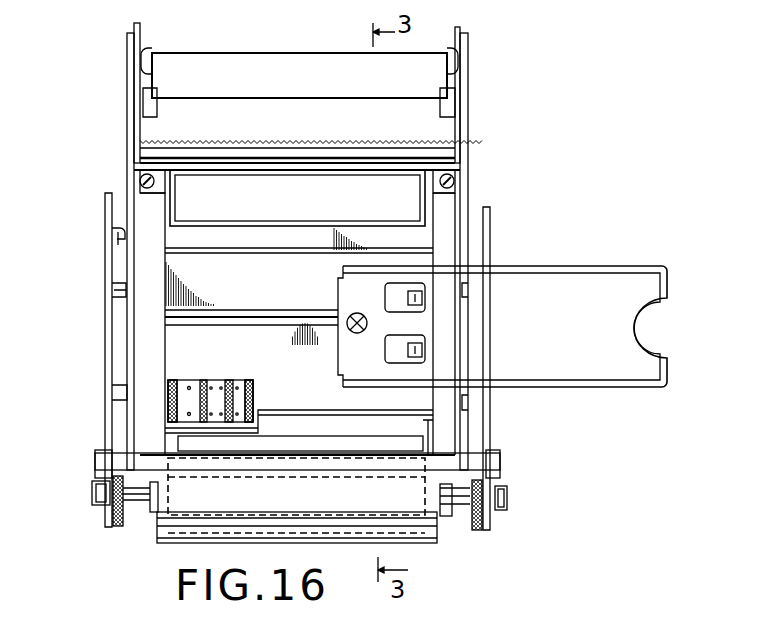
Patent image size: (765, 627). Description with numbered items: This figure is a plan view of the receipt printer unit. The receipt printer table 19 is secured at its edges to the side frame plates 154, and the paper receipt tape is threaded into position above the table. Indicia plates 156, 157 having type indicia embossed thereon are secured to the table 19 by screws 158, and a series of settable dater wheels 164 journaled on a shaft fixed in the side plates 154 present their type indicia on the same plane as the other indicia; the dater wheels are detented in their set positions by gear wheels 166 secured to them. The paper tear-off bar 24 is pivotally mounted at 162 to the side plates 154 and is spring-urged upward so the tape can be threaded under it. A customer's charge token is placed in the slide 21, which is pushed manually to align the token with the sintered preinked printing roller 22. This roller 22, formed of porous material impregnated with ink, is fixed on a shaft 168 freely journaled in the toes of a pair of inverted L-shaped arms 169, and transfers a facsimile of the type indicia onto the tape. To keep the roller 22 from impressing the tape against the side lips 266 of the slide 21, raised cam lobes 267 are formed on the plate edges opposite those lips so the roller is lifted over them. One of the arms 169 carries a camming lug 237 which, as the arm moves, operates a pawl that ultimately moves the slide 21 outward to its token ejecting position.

The receipt printer table 19 is at (278, 332).
The slide 21 is at (622, 316).
The printing roller 22 is at (410, 543).
The paper tear-off bar 24 is at (298, 143).
The side frame plates 154 is at (470, 140).
The indicia plate 156 is at (252, 214).
The indicia plate 157 is at (296, 420).
The screws 158 is at (140, 178).
The pivot 162 is at (148, 49).
The settable dater wheels 164 is at (240, 380).
The gear wheels 166 is at (173, 380).
The roller shaft 168 is at (92, 493).
The inverted L-shaped arms 169 is at (107, 327).
The camming lug 237 is at (114, 234).
The side lips 266 is at (343, 268).
The raised cam lobes 267 is at (125, 290).